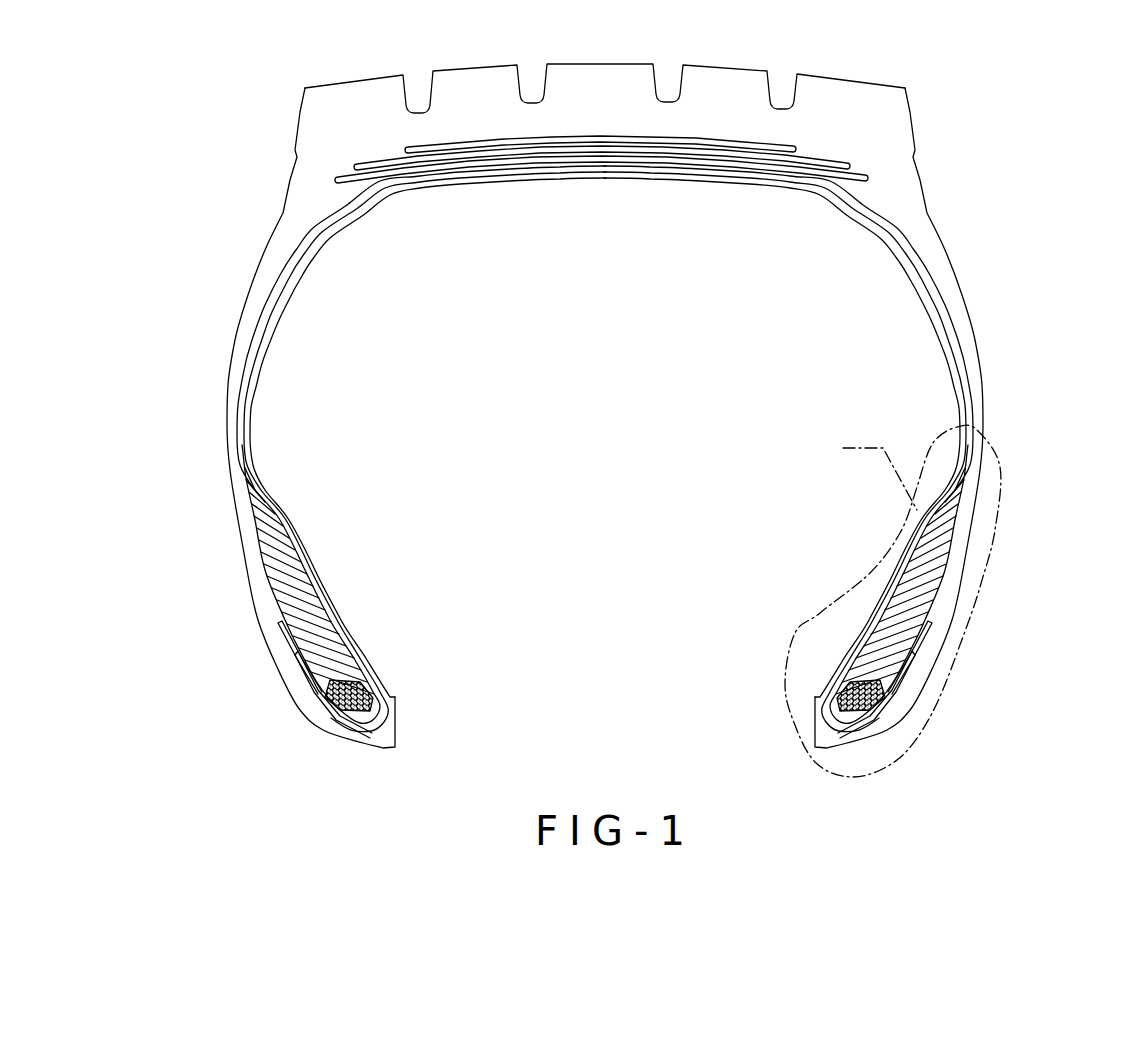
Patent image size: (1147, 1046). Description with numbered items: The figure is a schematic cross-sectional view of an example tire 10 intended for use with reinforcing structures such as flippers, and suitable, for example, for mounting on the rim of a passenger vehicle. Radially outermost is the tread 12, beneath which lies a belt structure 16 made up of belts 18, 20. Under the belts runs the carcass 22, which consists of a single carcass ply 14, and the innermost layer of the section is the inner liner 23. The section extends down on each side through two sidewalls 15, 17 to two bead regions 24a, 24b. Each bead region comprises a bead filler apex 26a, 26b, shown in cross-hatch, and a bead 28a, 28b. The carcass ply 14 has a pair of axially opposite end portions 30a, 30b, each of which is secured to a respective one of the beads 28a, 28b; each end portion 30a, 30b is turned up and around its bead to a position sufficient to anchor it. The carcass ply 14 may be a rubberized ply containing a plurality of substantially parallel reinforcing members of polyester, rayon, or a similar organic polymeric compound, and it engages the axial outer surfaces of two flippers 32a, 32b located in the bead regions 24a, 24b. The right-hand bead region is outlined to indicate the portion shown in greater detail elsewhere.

The tire 10 is at (230, 94).
The tread 12 is at (598, 73).
The carcass ply 14 is at (370, 198).
The sidewall 15 is at (247, 288).
The belt structure 16 is at (618, 147).
The sidewall 17 is at (972, 316).
The belt 18 is at (722, 157).
The belt 20 is at (660, 155).
The carcass 22 is at (765, 183).
The inner liner 23 is at (323, 242).
The bead region 24a is at (217, 592).
The bead region 24b is at (1037, 583).
The bead filler apex 26a is at (298, 597).
The bead filler apex 26b is at (910, 610).
The bead 28a is at (333, 703).
The bead 28b is at (877, 708).
The end portion 30a is at (282, 623).
The end portion 30b is at (933, 619).
The flipper 32a is at (307, 673).
The flipper 32b is at (913, 660).